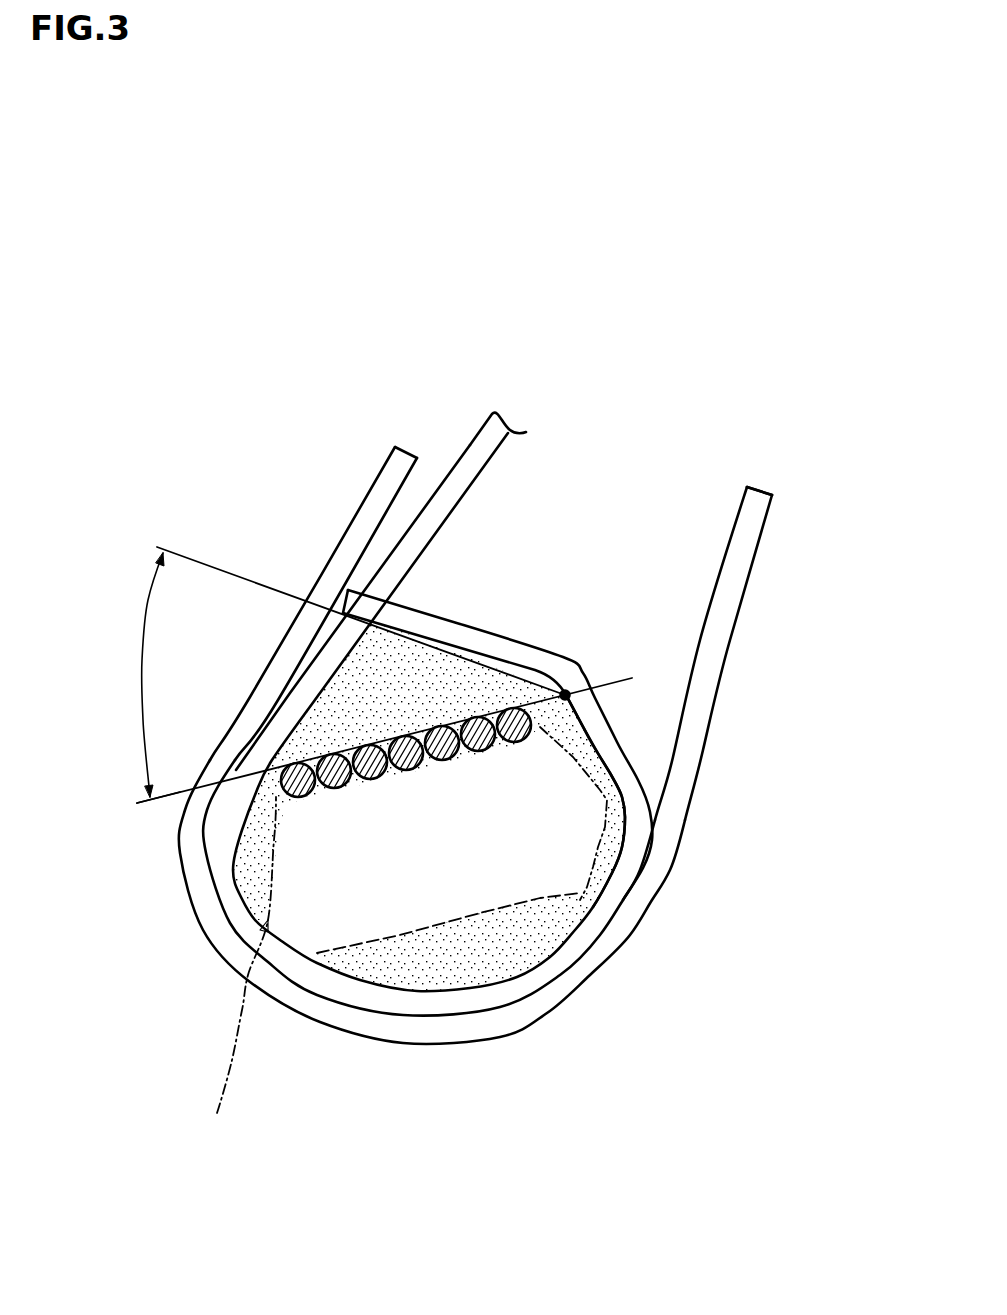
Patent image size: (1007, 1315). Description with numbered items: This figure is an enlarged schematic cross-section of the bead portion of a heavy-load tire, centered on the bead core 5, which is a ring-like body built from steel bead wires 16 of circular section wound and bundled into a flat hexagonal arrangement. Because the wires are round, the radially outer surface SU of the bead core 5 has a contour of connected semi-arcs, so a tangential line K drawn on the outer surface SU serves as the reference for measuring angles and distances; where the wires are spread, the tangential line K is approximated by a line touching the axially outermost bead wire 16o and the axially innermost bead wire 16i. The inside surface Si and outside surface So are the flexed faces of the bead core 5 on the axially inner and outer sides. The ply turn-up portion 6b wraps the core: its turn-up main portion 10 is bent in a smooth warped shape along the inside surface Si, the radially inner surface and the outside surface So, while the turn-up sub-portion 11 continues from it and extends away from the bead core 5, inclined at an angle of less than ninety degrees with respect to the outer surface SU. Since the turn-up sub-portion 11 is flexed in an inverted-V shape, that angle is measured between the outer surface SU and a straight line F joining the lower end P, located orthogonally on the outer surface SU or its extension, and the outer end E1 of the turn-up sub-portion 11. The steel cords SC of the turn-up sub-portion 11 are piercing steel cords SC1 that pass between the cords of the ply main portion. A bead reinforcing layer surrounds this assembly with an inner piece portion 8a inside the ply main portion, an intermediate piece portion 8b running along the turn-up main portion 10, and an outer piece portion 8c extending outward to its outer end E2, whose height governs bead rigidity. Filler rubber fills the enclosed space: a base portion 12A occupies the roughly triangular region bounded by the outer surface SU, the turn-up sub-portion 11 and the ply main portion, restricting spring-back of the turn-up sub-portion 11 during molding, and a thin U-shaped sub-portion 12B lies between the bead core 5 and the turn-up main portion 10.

The bead core 5 is at (499, 939).
The ply turn-up portion 6b is at (522, 676).
The inner piece portion 8a is at (383, 485).
The intermediate piece portion 8b is at (460, 1028).
The outer piece portion 8c is at (720, 623).
The turn-up main portion 10 is at (600, 723).
The turn-up sub-portion 11 is at (547, 653).
The base portion 12A is at (378, 693).
The sub-portion 12B is at (380, 963).
The bead wires 16 is at (460, 864).
The innermost bead wire 16i is at (295, 797).
The outermost bead wire 16o is at (523, 742).
The outer end of the turn-up sub-portion E1 is at (343, 610).
The outer end of the outer piece portion E2 is at (758, 487).
The straight line F is at (204, 563).
The tangential line K is at (167, 797).
The outer surface of the bead core SU is at (203, 784).
The lower end of the turn-up sub-portion P is at (567, 692).
The steel cords SC is at (472, 447).
The piercing steel cords SC1 is at (467, 638).
The inside surface of the bead core Si is at (237, 974).
The outside surface of the bead core So is at (575, 752).